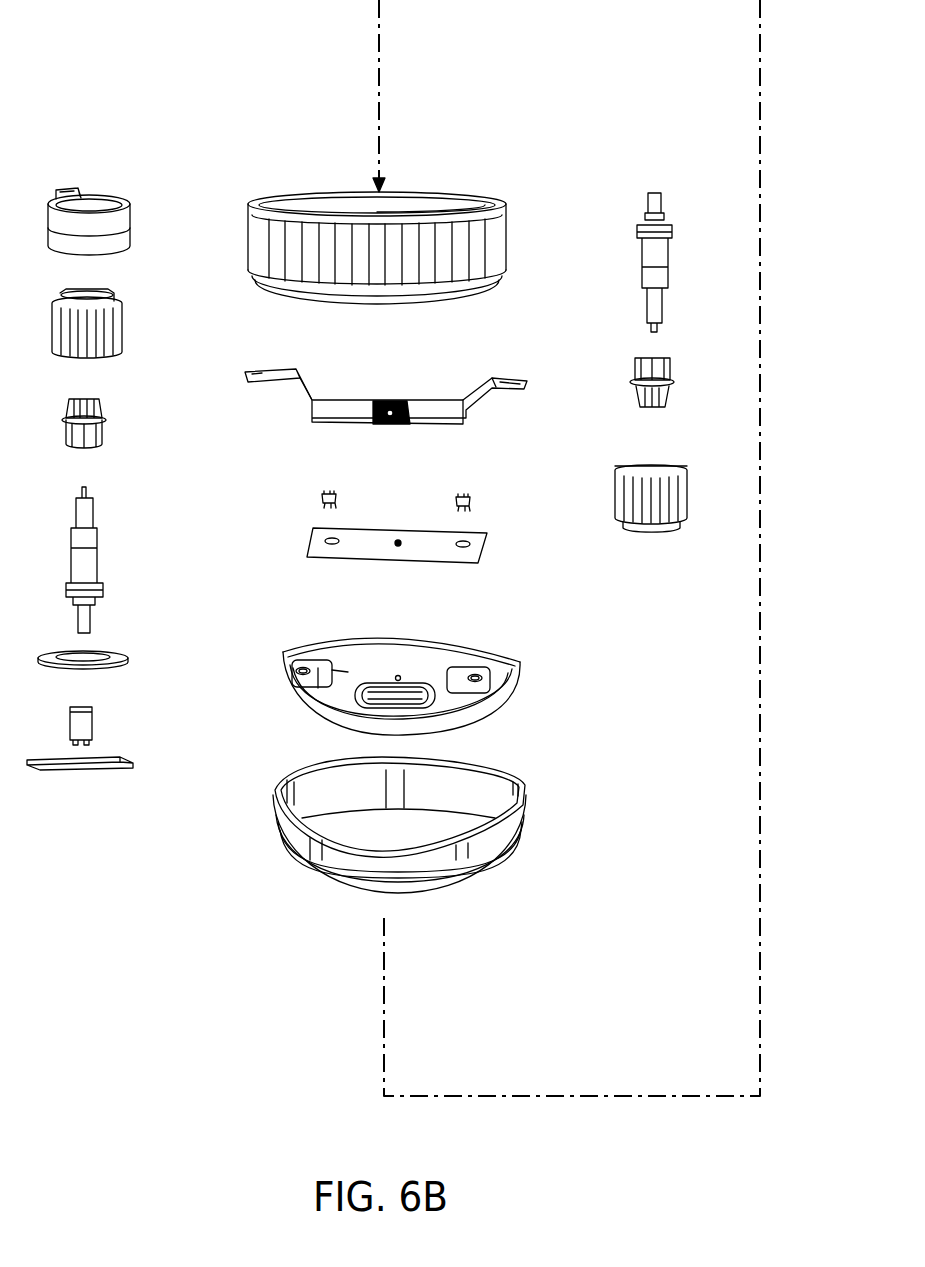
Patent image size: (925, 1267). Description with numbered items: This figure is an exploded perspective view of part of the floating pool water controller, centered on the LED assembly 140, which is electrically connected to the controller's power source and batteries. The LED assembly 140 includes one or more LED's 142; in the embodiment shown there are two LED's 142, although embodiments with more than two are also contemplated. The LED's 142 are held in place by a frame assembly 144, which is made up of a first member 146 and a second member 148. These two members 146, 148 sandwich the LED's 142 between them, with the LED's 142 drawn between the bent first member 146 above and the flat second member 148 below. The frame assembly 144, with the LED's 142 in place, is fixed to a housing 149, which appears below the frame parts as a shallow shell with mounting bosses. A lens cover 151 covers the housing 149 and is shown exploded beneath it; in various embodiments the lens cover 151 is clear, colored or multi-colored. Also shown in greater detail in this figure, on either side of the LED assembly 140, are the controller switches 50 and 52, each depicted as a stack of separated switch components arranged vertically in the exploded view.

The controller switch 50 is at (170, 191).
The controller switch 52 is at (638, 228).
The LED assembly 140 is at (264, 941).
The LED's 142 is at (472, 505).
The frame assembly 144 is at (264, 483).
The first member 146 is at (330, 404).
The second member 148 is at (488, 557).
The housing 149 is at (513, 696).
The lens cover 151 is at (526, 840).